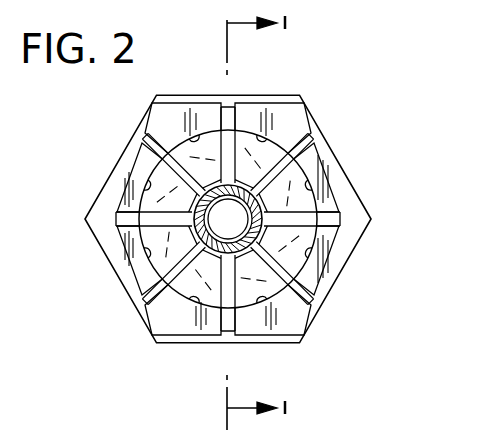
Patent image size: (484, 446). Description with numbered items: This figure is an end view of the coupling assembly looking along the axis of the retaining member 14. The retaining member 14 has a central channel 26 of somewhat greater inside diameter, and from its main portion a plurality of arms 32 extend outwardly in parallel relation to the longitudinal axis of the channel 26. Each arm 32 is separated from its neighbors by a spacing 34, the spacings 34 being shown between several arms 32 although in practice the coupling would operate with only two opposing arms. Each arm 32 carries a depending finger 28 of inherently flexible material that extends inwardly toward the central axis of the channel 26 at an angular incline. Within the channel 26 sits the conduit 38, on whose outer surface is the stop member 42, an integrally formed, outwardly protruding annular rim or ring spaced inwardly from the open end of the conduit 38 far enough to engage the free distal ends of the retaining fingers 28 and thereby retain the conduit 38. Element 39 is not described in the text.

The retaining member 14 is at (388, 193).
The central channel 26 is at (195, 133).
The depending finger 28 is at (338, 186).
The arm 32 is at (177, 125).
The spacing 34 is at (156, 151).
The conduit 38 is at (272, 249).
The spokes 39 is at (262, 253).
The stop member 42 is at (241, 245).